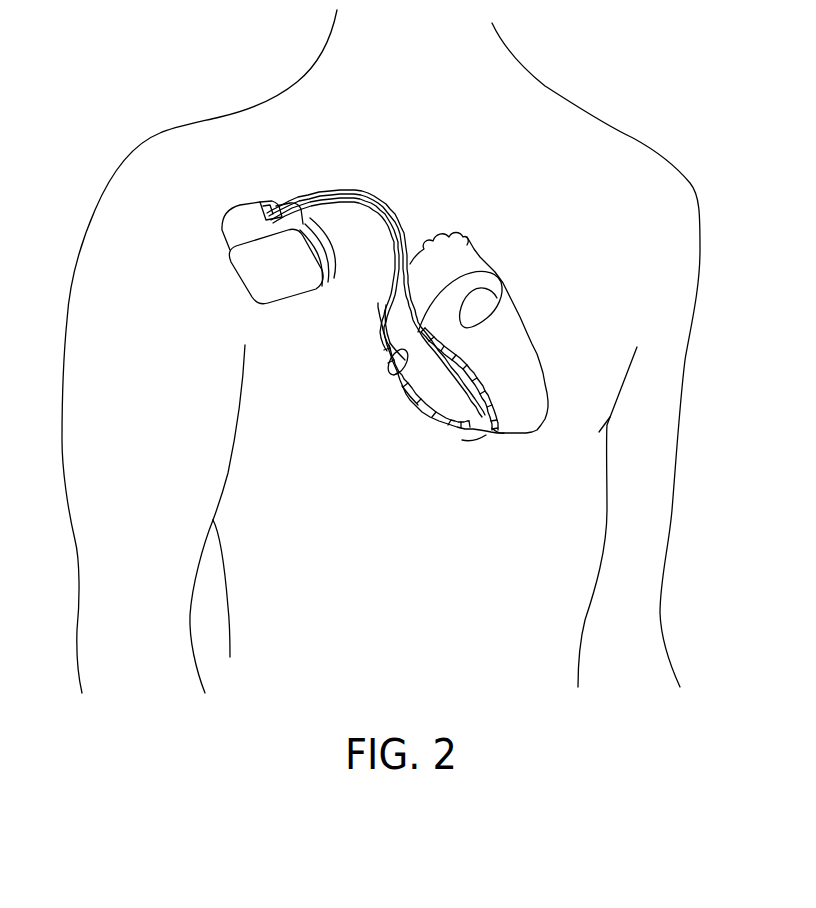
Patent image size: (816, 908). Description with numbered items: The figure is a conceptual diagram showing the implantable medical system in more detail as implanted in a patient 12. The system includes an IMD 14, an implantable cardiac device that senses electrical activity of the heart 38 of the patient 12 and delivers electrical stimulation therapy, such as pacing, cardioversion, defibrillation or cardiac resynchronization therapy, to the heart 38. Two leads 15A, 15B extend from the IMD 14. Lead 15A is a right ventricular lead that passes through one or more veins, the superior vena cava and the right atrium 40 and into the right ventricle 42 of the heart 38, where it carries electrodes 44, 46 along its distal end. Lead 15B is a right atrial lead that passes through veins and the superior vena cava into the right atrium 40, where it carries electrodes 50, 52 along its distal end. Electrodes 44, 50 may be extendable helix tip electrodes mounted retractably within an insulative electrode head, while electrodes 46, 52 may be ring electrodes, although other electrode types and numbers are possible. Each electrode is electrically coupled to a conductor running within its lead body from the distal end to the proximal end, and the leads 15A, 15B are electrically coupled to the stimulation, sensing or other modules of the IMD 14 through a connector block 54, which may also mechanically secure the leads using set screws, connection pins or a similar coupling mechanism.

The patient 12 is at (582, 107).
The IMD 14 is at (228, 266).
The lead 15A is at (363, 192).
The lead 15B is at (367, 216).
The connector block 54 is at (243, 220).
The heart 38 is at (506, 439).
The right atrium 40 is at (390, 343).
The right ventricle 42 is at (427, 400).
The electrode 44 is at (492, 428).
The electrode 46 is at (487, 400).
The electrode 50 is at (425, 328).
The electrode 52 is at (402, 386).